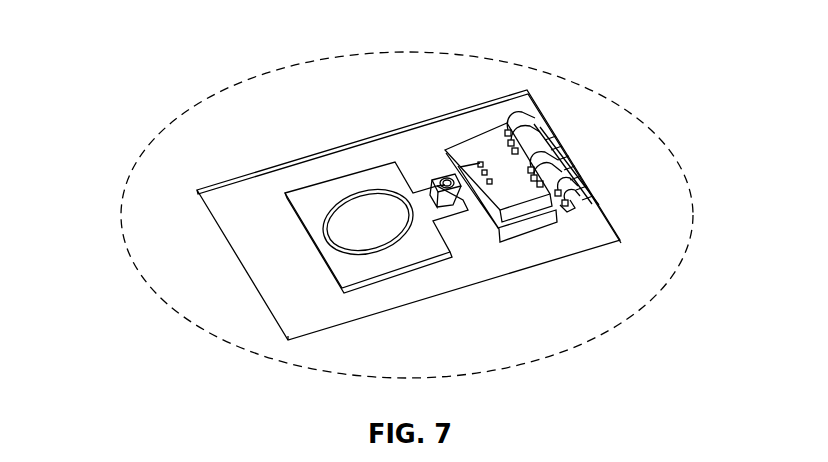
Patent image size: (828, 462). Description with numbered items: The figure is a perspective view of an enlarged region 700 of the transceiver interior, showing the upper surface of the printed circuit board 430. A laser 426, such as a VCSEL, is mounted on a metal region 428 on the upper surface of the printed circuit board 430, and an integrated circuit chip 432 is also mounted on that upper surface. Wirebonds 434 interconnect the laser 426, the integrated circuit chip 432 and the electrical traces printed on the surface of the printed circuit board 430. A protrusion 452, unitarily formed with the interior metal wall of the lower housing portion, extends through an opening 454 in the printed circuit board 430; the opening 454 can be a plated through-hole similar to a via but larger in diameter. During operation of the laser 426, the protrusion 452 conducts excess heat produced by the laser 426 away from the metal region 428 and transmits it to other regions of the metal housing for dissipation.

The enlarged region 700 is at (591, 342).
The printed circuit board 430 is at (263, 187).
The metal region 428 is at (317, 195).
The opening 454 is at (387, 185).
The protrusion 452 is at (385, 245).
The laser 426 is at (440, 178).
The integrated circuit chip 432 is at (485, 132).
The wirebonds 434 is at (468, 157).